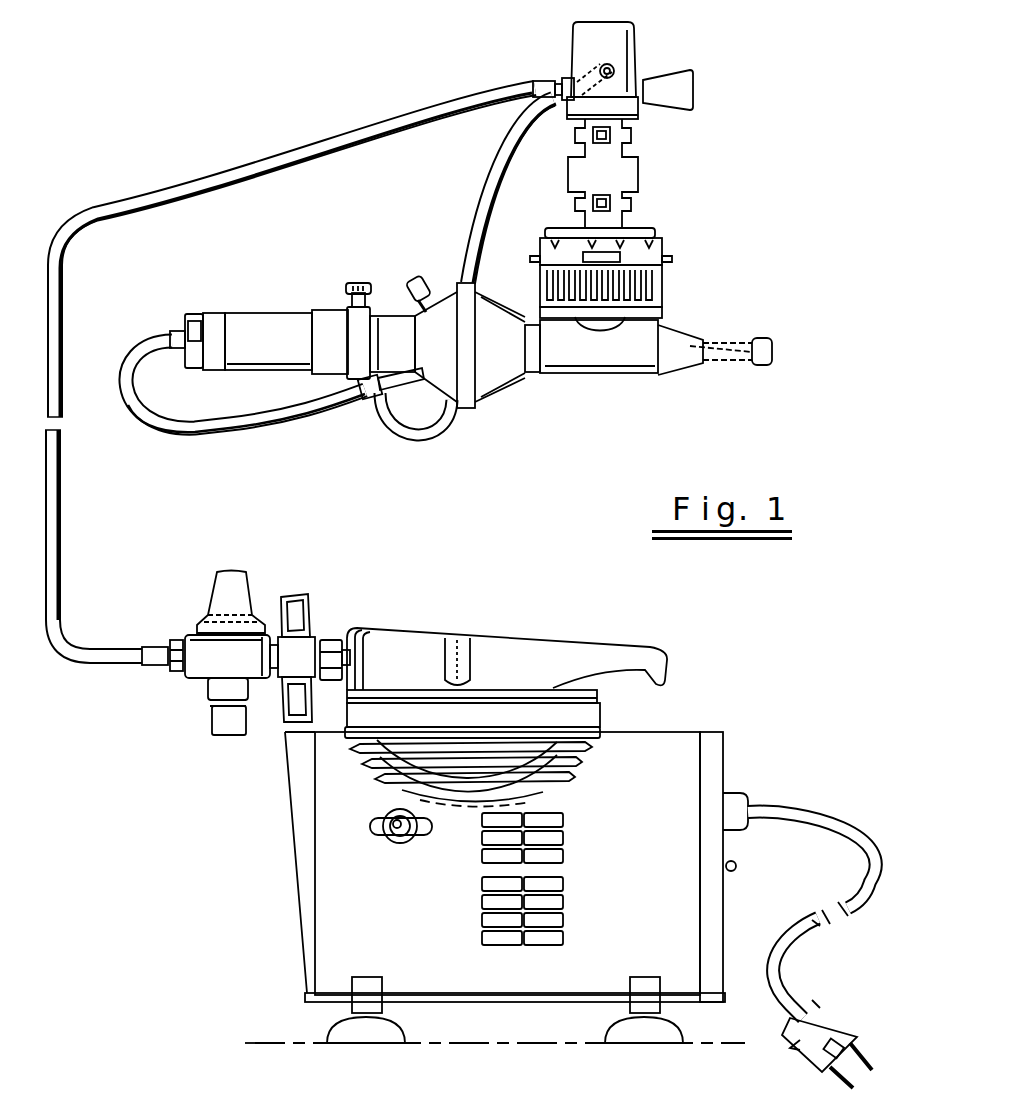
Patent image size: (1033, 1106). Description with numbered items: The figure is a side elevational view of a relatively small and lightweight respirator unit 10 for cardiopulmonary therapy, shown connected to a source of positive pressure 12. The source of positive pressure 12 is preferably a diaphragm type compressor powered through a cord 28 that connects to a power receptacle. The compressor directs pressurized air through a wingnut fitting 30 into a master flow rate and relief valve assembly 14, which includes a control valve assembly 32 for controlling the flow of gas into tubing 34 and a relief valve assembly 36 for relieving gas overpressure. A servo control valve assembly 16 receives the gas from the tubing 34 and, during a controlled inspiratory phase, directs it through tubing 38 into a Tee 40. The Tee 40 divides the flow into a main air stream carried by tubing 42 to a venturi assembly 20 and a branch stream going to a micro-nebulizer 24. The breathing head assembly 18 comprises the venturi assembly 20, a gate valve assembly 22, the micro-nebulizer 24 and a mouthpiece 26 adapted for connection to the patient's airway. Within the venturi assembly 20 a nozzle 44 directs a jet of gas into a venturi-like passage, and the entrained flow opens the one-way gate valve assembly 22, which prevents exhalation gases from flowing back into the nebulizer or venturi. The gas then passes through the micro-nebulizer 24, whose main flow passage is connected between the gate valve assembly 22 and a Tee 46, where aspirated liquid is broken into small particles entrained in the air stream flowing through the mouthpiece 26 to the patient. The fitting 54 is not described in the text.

The respirator unit 10 is at (160, 82).
The source of positive pressure 12 is at (713, 729).
The master flow rate and relief valve assembly 14 is at (256, 634).
The servo control valve assembly 16 is at (656, 174).
The breathing head assembly 18 is at (594, 392).
The venturi assembly 20 is at (262, 302).
The gate valve assembly 22 is at (331, 296).
The micro-nebulizer 24 is at (431, 252).
The mouthpiece 26 is at (727, 330).
The cord 28 is at (818, 815).
The wingnut fitting 30 is at (303, 648).
The control valve assembly 32 is at (222, 592).
The tubing 34 is at (55, 444).
The relief valve assembly 36 is at (215, 718).
The tubing 38 is at (492, 174).
The Tee 40 is at (376, 398).
The tubing 42 is at (250, 428).
The nozzle 44 is at (200, 330).
The Tee 46 is at (573, 363).
The tube fitting 54 is at (569, 79).